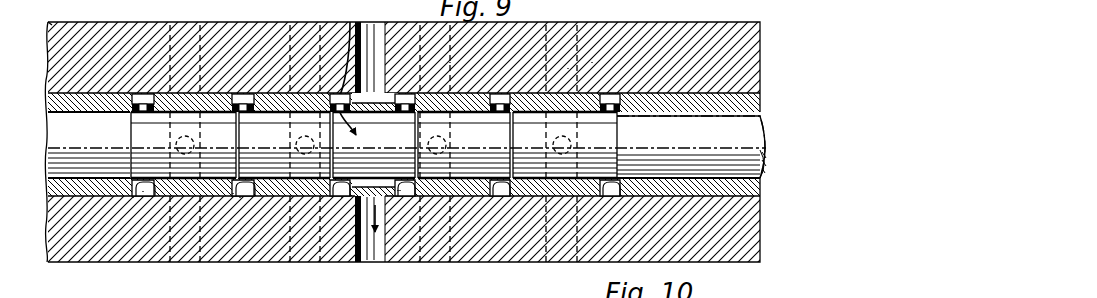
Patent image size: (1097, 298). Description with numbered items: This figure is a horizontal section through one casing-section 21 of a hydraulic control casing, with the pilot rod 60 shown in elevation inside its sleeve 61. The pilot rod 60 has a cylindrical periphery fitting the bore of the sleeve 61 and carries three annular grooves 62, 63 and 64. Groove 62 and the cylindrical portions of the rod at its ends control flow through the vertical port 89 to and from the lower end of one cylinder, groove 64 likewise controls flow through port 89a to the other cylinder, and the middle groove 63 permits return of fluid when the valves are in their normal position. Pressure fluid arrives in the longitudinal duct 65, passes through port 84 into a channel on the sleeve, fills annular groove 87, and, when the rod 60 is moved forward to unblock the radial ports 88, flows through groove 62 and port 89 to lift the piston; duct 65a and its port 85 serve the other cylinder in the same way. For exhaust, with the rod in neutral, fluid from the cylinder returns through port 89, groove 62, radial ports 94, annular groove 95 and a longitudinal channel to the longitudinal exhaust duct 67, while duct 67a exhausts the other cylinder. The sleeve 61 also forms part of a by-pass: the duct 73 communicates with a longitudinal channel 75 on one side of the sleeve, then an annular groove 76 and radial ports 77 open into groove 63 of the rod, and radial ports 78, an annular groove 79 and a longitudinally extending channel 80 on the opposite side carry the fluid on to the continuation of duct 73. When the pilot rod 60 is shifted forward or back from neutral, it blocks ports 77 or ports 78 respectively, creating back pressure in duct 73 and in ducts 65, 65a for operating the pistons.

The casing-section 21 is at (65, 30).
The pilot rod 60 is at (762, 128).
The sleeve 61 is at (757, 96).
The annular groove 62 is at (163, 197).
The annular groove 63 is at (338, 186).
The annular groove 64 is at (530, 172).
The duct 65 is at (290, 45).
The duct 65a is at (452, 60).
The longitudinal duct 67 is at (175, 50).
The longitudinally extending duct 67a is at (592, 62).
The duct 73 is at (375, 42).
The longitudinal channel 75 is at (374, 145).
The annular groove 76 is at (342, 197).
The radial ports 77 is at (350, 68).
The radial ports 78 is at (401, 190).
The annular groove 79 is at (398, 190).
The longitudinally extending channel 80 is at (358, 200).
The port 84 is at (297, 142).
The port 85 is at (448, 142).
The annular groove 87 is at (233, 193).
The radial ports 88 is at (240, 197).
The vertical port 89 is at (176, 145).
The port 89a is at (568, 68).
The radial ports 94 is at (143, 191).
The annular groove 95 is at (133, 197).